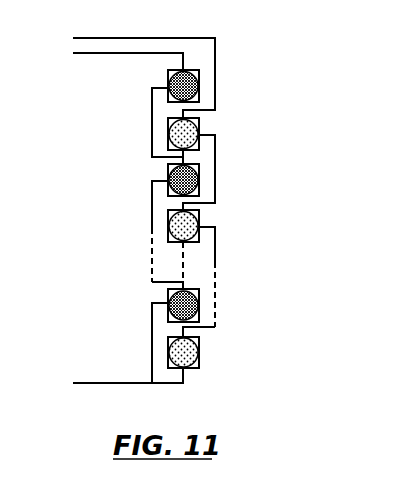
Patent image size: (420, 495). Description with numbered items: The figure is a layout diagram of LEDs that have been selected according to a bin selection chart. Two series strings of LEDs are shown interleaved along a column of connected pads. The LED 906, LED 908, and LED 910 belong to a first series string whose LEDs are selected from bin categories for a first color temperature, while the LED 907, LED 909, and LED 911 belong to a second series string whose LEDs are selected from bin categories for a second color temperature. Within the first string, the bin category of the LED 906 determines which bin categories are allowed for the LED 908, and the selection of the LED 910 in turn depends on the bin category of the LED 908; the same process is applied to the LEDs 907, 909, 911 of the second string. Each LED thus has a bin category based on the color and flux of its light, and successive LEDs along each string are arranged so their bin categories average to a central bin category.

The LED 906 is at (168, 76).
The LED 907 is at (199, 128).
The LED 908 is at (168, 171).
The LED 909 is at (199, 220).
The LED 910 is at (168, 297).
The LED 911 is at (199, 343).